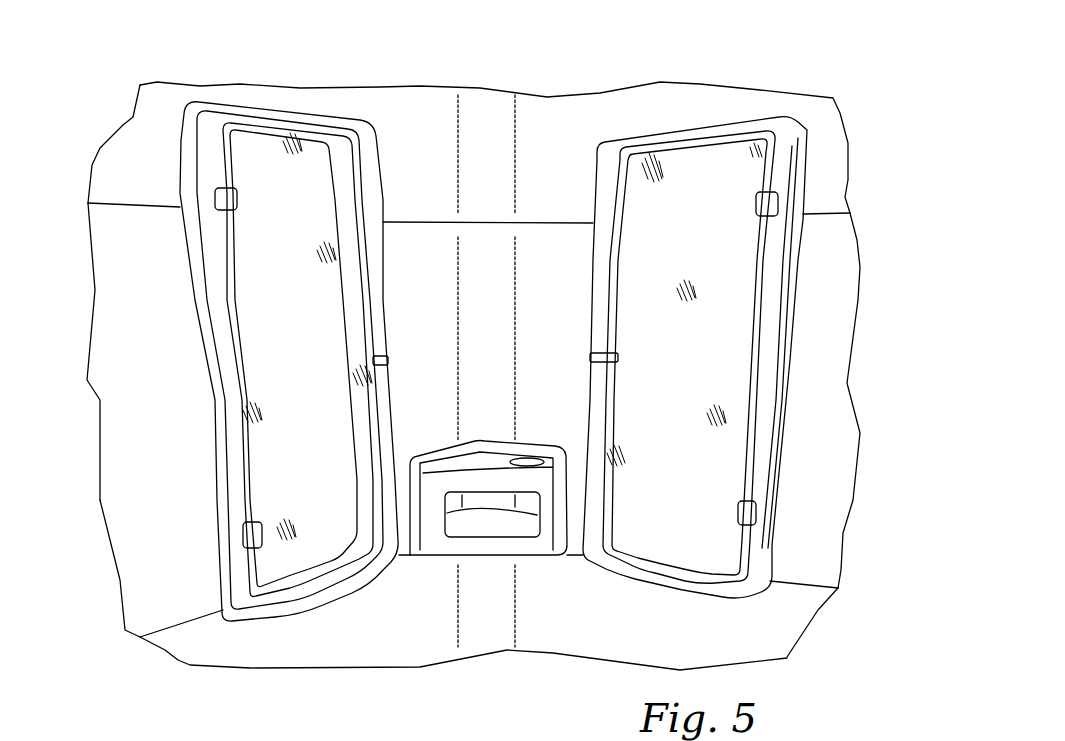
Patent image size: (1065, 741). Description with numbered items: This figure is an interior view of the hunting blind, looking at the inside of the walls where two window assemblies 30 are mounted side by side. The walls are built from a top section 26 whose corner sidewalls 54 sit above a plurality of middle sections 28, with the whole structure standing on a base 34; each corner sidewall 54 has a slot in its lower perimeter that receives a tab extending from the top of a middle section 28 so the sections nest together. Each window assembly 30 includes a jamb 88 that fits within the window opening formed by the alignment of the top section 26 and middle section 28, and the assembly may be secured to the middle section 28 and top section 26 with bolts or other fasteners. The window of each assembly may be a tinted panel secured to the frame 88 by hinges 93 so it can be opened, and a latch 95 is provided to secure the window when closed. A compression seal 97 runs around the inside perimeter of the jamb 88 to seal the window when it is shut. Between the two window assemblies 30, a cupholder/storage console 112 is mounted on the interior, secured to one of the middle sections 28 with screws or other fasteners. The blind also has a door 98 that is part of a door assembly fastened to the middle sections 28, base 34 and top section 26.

The top section 26 is at (830, 140).
The middle section 28 is at (830, 280).
The window assembly 30 is at (238, 108).
The base 34 is at (265, 655).
The corner sidewall 54 is at (488, 104).
The jamb 88 is at (743, 587).
The hinge 93 is at (227, 194).
The latch 95 is at (373, 362).
The compression seal 97 is at (240, 353).
The door 98 is at (264, 140).
The cupholder/storage console 112 is at (533, 555).